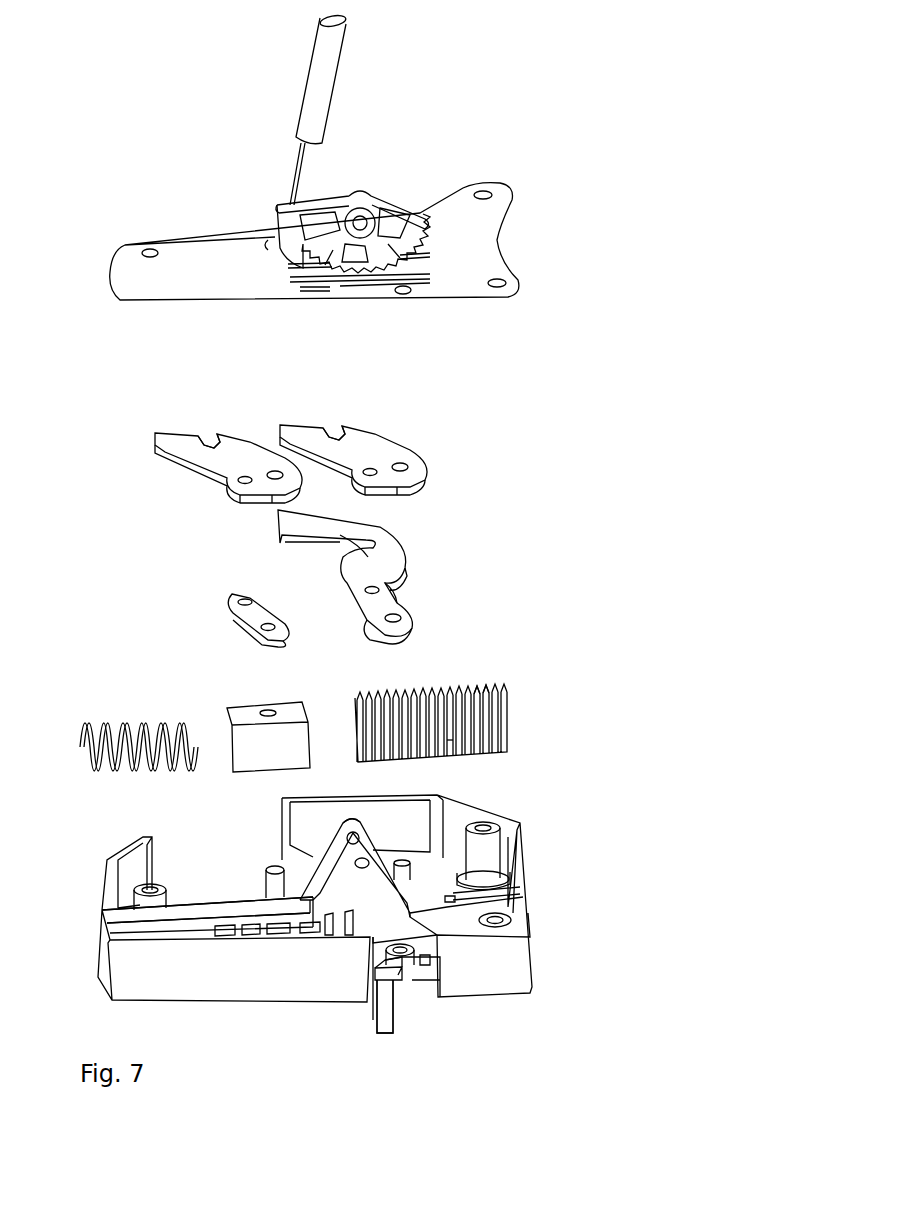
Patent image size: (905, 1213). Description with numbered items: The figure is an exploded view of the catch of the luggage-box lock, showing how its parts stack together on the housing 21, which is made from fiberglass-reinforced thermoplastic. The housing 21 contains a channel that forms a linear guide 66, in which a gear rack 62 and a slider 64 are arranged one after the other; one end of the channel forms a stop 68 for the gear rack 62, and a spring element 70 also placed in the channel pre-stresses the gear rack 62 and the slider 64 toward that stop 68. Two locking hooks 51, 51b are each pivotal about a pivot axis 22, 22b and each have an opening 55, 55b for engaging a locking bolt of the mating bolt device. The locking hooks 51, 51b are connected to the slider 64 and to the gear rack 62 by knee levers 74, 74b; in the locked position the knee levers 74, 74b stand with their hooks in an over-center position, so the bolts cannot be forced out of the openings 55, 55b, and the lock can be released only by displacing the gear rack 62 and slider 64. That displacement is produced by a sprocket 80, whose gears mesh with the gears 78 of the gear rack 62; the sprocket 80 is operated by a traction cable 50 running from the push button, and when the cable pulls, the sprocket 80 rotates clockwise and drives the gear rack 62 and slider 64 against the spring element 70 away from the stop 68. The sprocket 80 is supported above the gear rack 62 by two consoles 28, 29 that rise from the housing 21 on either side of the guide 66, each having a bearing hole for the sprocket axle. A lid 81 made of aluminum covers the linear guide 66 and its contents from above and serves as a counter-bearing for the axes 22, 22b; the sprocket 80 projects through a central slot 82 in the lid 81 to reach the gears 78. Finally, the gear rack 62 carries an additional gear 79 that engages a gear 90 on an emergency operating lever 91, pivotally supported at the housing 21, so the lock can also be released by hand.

The traction cable 50 is at (301, 172).
The sprocket 80 is at (365, 195).
The lid 81 is at (478, 240).
The central slot 82 is at (425, 267).
The locking hook 51 is at (237, 456).
The locking hook 51b is at (372, 449).
The opening 55 is at (228, 435).
The opening 55b is at (352, 429).
The knee lever 74 is at (258, 608).
The knee lever 74b is at (383, 605).
The spring element 70 is at (82, 745).
The slider 64 is at (257, 747).
The gear rack 62 is at (462, 722).
The gears 78 is at (478, 690).
The additional gear 79 is at (455, 743).
The housing 21 is at (520, 895).
The pivot axis 22 is at (270, 870).
The pivot axis 22b is at (413, 862).
The console 28 is at (345, 907).
The console 29 is at (370, 838).
The linear guide 66 is at (195, 920).
The stop 68 is at (483, 905).
The gear 90 is at (428, 960).
The emergency operating lever 91 is at (383, 995).